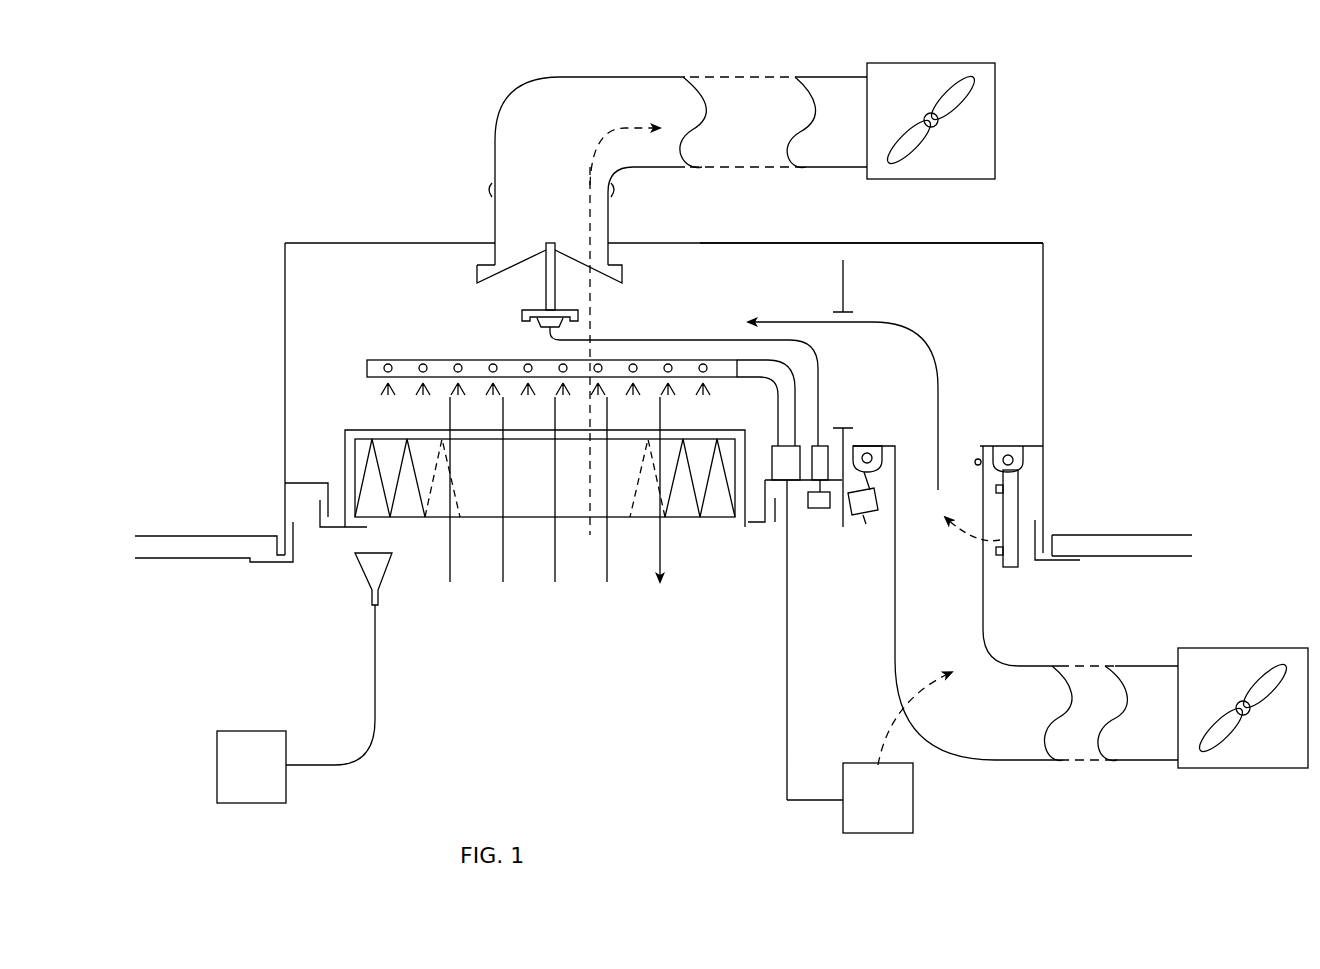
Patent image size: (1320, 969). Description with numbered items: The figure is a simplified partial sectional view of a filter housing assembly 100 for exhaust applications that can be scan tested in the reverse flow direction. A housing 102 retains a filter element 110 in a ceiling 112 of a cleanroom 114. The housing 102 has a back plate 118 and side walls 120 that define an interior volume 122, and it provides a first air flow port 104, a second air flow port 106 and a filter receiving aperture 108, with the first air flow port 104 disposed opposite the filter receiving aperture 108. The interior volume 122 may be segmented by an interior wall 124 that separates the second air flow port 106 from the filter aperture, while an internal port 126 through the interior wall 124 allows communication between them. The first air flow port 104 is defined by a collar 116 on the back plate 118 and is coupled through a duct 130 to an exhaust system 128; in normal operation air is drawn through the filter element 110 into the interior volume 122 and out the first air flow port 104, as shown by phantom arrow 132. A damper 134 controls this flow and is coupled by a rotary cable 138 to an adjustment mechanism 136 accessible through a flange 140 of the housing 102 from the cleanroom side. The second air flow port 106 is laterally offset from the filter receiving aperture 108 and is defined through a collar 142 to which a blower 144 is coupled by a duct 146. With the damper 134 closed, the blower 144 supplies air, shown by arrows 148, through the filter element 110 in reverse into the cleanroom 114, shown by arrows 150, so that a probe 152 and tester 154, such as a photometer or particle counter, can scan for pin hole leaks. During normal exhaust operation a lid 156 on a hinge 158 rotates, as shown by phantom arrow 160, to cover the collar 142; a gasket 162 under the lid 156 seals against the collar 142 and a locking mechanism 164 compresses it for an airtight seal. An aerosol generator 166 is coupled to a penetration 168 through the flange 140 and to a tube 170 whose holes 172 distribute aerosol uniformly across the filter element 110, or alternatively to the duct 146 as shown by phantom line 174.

The filter housing assembly 100 is at (1127, 205).
The housing 102 is at (714, 240).
The first air flow port 104 is at (515, 250).
The second air flow port 106 is at (963, 440).
The filter receiving aperture 108 is at (360, 405).
The filter element 110 is at (527, 498).
The ceiling 112 is at (1148, 535).
The cleanroom 114 is at (547, 761).
The collar 116 is at (608, 240).
The back plate 118 is at (818, 242).
The side walls 120 is at (1045, 325).
The interior volume 122 is at (322, 311).
The interior wall 124 is at (845, 290).
The internal port 126 is at (860, 312).
The exhaust system 128 is at (935, 63).
The duct 130 is at (495, 102).
The phantom arrow 132 is at (603, 148).
The damper 134 is at (512, 282).
The adjustment mechanism 136 is at (820, 470).
The rotary cable 138 is at (612, 340).
The flange 140 is at (825, 508).
The collar 142 is at (978, 464).
The blower 144 is at (1262, 648).
The duct 146 is at (893, 692).
The arrows 148 is at (931, 352).
The arrows 150 is at (660, 575).
The probe 152 is at (358, 570).
The tester 154 is at (232, 781).
The lid 156 is at (1010, 507).
The hinge 158 is at (1020, 465).
The phantom arrow 160 is at (963, 528).
The gasket 162 is at (990, 560).
The locking mechanism 164 is at (866, 508).
The aerosol generator 166 is at (860, 813).
The penetration 168 is at (772, 446).
The tube 170 is at (412, 360).
The holes 172 is at (490, 360).
The phantom line 174 is at (880, 735).